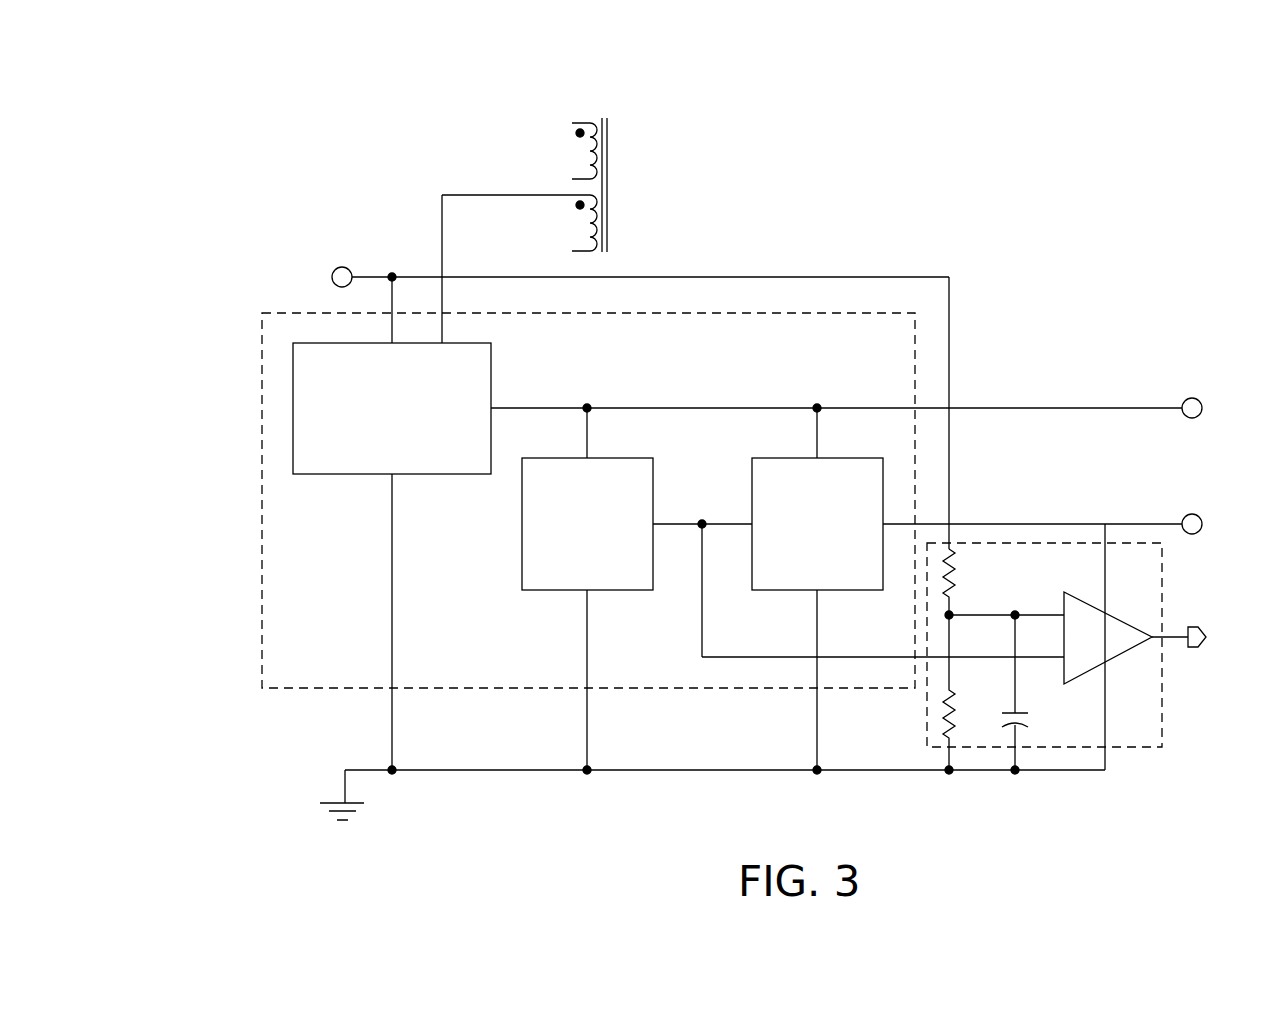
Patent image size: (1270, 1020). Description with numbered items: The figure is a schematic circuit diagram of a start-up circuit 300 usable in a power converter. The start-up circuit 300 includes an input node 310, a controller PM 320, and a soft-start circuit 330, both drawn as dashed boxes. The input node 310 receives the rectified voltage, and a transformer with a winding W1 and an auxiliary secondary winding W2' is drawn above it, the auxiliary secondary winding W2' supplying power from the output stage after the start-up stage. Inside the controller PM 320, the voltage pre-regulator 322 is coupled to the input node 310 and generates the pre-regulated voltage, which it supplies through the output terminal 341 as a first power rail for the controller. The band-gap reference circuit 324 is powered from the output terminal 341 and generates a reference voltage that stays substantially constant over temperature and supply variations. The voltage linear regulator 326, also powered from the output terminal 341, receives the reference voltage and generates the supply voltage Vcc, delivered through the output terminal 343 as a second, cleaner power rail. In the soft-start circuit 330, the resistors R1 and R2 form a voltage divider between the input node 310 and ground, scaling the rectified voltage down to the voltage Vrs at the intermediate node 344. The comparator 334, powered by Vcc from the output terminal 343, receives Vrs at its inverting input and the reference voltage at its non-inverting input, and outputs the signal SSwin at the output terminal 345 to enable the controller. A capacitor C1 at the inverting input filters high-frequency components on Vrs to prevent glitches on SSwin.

The start-up circuit 300 is at (174, 125).
The input node 310 is at (340, 266).
The controller PM 320 is at (260, 491).
The voltage pre-regulator 322 is at (349, 477).
The band-gap reference circuit 324 is at (557, 592).
The voltage linear regulator 326 is at (752, 470).
The soft-start circuit 330 is at (1140, 752).
The comparator 334 is at (1122, 657).
The output terminal 341 is at (1195, 400).
The output terminal 343 is at (1195, 515).
The intermediate node 344 is at (953, 612).
The output terminal 345 is at (1196, 627).
The primary winding W1 is at (575, 175).
The auxiliary secondary winding W2' is at (567, 223).
The resistor R1 is at (965, 582).
The resistor R2 is at (967, 692).
The capacitor C1 is at (1034, 692).